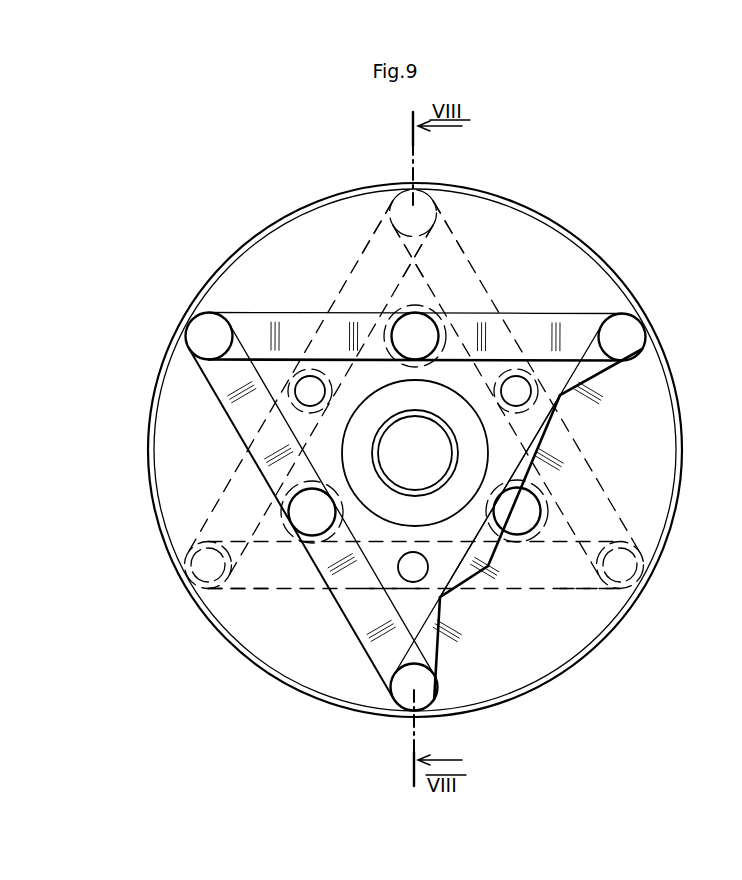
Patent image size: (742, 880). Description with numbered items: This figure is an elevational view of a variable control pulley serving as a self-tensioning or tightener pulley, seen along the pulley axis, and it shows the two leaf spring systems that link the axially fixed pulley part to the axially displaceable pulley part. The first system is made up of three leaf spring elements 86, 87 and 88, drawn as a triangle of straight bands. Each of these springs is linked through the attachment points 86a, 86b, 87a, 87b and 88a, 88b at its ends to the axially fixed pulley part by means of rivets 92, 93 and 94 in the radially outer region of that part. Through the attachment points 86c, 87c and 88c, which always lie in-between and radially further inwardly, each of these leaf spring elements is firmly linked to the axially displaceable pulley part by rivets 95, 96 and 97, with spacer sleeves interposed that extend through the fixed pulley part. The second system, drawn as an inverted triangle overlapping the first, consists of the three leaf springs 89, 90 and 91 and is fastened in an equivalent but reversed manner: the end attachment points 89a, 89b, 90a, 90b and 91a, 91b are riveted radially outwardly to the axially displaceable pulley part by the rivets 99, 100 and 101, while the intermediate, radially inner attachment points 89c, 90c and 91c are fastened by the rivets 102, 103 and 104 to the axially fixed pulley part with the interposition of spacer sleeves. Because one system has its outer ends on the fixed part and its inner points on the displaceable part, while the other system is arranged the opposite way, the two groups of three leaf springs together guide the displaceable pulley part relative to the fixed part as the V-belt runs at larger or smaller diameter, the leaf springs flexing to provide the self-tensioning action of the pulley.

The leaf spring element 86 is at (450, 251).
The attachment point 86a is at (422, 200).
The attachment point 86b is at (641, 558).
The attachment point 86c is at (539, 384).
The leaf spring element 87 is at (579, 589).
The attachment point 87a is at (629, 590).
The attachment point 87b is at (208, 588).
The attachment point 87c is at (378, 661).
The leaf spring element 88 is at (230, 498).
The attachment point 88a is at (188, 557).
The attachment point 88b is at (390, 217).
The attachment point 88c is at (289, 392).
The leaf spring element 89 is at (590, 318).
The attachment point 89a is at (228, 312).
The attachment point 89b is at (627, 312).
The attachment point 89c is at (440, 318).
The leaf spring element 90 is at (555, 472).
The attachment point 90a is at (645, 349).
The attachment point 90b is at (440, 697).
The attachment point 90c is at (537, 543).
The leaf spring element 91 is at (369, 644).
The attachment point 91a is at (396, 692).
The attachment point 91b is at (192, 340).
The attachment point 91c is at (303, 546).
The rivet 92 is at (408, 205).
The rivet 93 is at (642, 567).
The rivet 94 is at (196, 569).
The rivet 95 is at (522, 395).
The rivet 96 is at (410, 582).
The rivet 97 is at (302, 397).
The rivet 99 is at (628, 331).
The rivet 100 is at (438, 697).
The rivet 101 is at (200, 325).
The rivet 102 is at (427, 343).
The rivet 103 is at (516, 528).
The rivet 104 is at (298, 518).